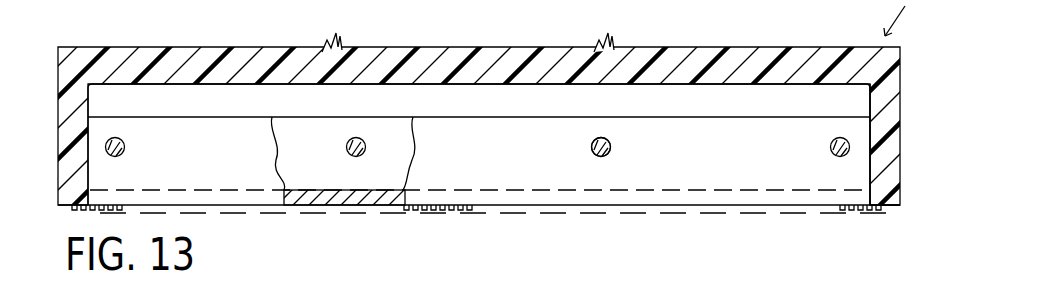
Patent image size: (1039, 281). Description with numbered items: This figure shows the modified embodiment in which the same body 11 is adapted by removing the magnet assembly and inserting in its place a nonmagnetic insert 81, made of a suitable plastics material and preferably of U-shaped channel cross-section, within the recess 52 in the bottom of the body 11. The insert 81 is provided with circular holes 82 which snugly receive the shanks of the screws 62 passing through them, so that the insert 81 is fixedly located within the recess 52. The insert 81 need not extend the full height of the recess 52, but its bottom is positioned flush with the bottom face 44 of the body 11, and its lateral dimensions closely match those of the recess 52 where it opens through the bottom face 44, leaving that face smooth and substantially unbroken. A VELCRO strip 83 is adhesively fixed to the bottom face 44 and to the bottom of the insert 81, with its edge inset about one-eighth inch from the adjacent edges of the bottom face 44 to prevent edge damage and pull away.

The body 11 is at (87, 35).
The recess 52 is at (120, 90).
The screw 62 is at (611, 149).
The circular hole 82 is at (596, 143).
The nonmagnetic insert 81 is at (548, 178).
The VELCRO strip 83 is at (442, 214).
The bottom face 44 is at (893, 205).